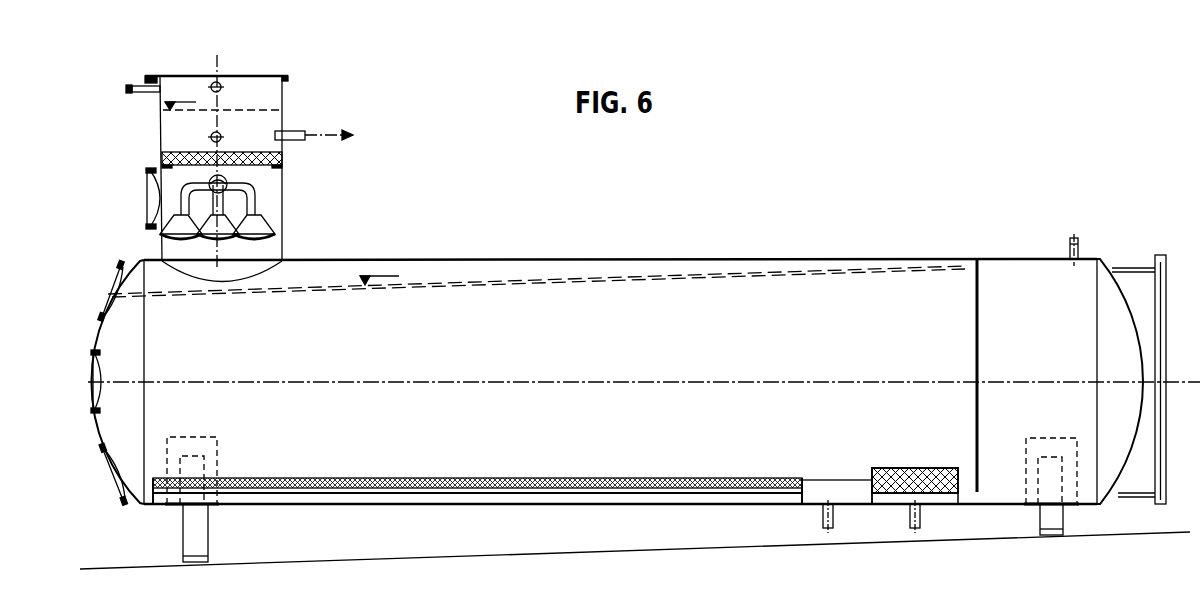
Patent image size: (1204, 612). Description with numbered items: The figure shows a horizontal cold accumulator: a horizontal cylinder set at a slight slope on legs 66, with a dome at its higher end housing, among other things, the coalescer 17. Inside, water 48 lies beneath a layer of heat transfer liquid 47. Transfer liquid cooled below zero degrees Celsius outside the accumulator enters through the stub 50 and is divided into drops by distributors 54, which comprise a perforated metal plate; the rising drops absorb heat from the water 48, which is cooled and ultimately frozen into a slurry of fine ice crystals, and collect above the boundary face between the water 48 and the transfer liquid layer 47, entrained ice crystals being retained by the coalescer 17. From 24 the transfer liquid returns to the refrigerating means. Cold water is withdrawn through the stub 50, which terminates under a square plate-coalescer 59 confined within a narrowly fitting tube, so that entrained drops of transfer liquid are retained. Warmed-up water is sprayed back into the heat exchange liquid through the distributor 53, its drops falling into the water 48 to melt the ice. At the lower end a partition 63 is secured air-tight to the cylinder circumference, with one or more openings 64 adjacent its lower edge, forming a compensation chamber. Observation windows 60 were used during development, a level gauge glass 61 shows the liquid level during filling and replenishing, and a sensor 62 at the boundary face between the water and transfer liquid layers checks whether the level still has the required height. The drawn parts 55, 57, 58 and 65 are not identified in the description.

The coalescer 17 is at (283, 157).
The transfer liquid return connection 24 is at (325, 133).
The layer of transfer liquid 47 is at (178, 132).
The water 48 is at (537, 330).
The stub 50 is at (910, 522).
The distributor 53 is at (258, 231).
The distributors 54 is at (462, 490).
The drain outlet 55 is at (823, 521).
The vent 57 is at (1067, 246).
The level indicator 58 is at (184, 102).
The plate-coalescer 59 is at (933, 488).
The observation windows 60 is at (150, 196).
The level gauge glass 61 is at (1168, 460).
The sensor 62 is at (381, 276).
The partition 63 is at (980, 309).
The openings 64 is at (978, 497).
The inlet pipe 65 is at (137, 87).
The legs 66 is at (197, 540).